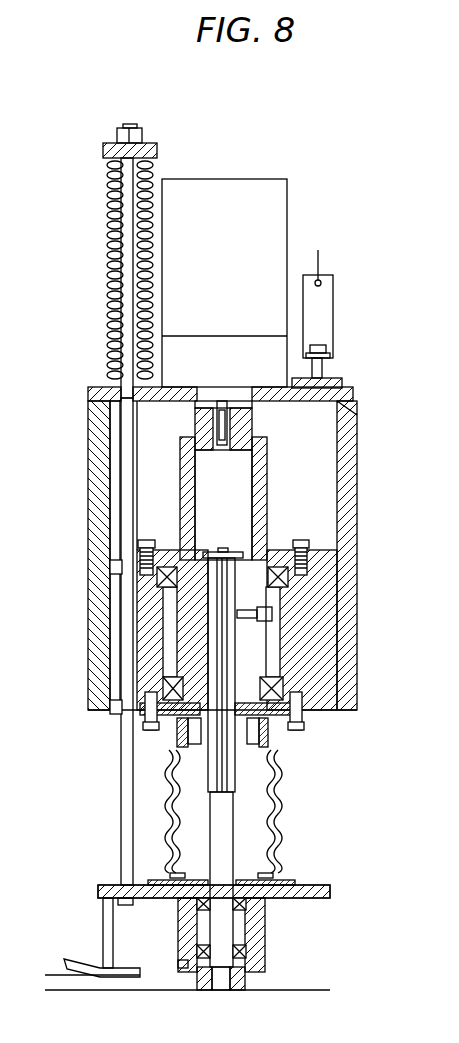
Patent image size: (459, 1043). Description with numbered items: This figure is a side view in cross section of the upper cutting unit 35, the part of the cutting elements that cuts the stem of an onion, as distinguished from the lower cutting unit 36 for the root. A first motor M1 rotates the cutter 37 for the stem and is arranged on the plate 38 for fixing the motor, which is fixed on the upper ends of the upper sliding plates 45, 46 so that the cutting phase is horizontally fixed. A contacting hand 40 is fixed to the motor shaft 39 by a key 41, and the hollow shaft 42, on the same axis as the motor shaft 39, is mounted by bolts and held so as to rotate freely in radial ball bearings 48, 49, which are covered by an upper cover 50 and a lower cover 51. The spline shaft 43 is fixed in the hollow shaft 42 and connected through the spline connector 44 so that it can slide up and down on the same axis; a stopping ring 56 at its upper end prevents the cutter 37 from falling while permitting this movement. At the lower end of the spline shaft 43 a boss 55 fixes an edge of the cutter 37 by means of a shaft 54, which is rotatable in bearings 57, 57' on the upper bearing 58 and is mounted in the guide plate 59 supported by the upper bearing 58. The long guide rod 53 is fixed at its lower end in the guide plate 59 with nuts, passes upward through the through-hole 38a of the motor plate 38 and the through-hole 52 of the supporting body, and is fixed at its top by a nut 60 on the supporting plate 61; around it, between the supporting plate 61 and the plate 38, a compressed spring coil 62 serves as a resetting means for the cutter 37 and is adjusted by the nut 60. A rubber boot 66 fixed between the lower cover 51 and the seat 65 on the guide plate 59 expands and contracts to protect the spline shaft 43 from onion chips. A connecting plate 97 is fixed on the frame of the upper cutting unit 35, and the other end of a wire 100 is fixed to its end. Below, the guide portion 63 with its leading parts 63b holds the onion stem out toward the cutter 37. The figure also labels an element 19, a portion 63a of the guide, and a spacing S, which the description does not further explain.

The nut 60 is at (118, 135).
The supporting plate for the guide rod 61 is at (104, 152).
The compressed spring coil 62 is at (107, 240).
The through-hole 52 is at (121, 620).
The guide rod 53 is at (121, 822).
The first motor M1 is at (238, 179).
The connecting plate 97 is at (328, 322).
The wire 100 is at (320, 262).
The plate for fixing the motor 38 is at (342, 382).
The through-hole of the motor fixing plate 38a is at (100, 388).
The upper cutting unit 35 is at (84, 494).
The upper sliding plate 45 is at (88, 406).
The upper sliding plate 46 is at (352, 432).
The lower cutting unit 36 is at (110, 568).
The rotary body 19 is at (330, 636).
The contacting hand 40 is at (255, 424).
The motor shaft 39 is at (200, 406).
The key 41 is at (214, 432).
The hollow shaft 42 is at (262, 472).
The stopping ring 56 is at (235, 550).
The spline connector 44 is at (272, 560).
The spline shaft 43 is at (235, 778).
The radial ball bearing 48 is at (290, 580).
The radial ball bearing 49 is at (285, 690).
The upper cover 50 is at (308, 546).
The lower cover 51 is at (302, 722).
The boot 66 is at (279, 826).
The seat 65 is at (290, 882).
The guide plate 59 is at (331, 892).
The bearing 57 is at (155, 915).
The bearing 57' is at (166, 977).
The shaft 54 is at (225, 926).
The upper bearing 58 is at (265, 950).
The boss 55 is at (246, 978).
The arm mounting 63a is at (105, 922).
The guide portion 63 is at (130, 964).
The leading part 63b is at (78, 960).
The cutter for the stem 37 is at (272, 992).
The clearance S is at (50, 965).